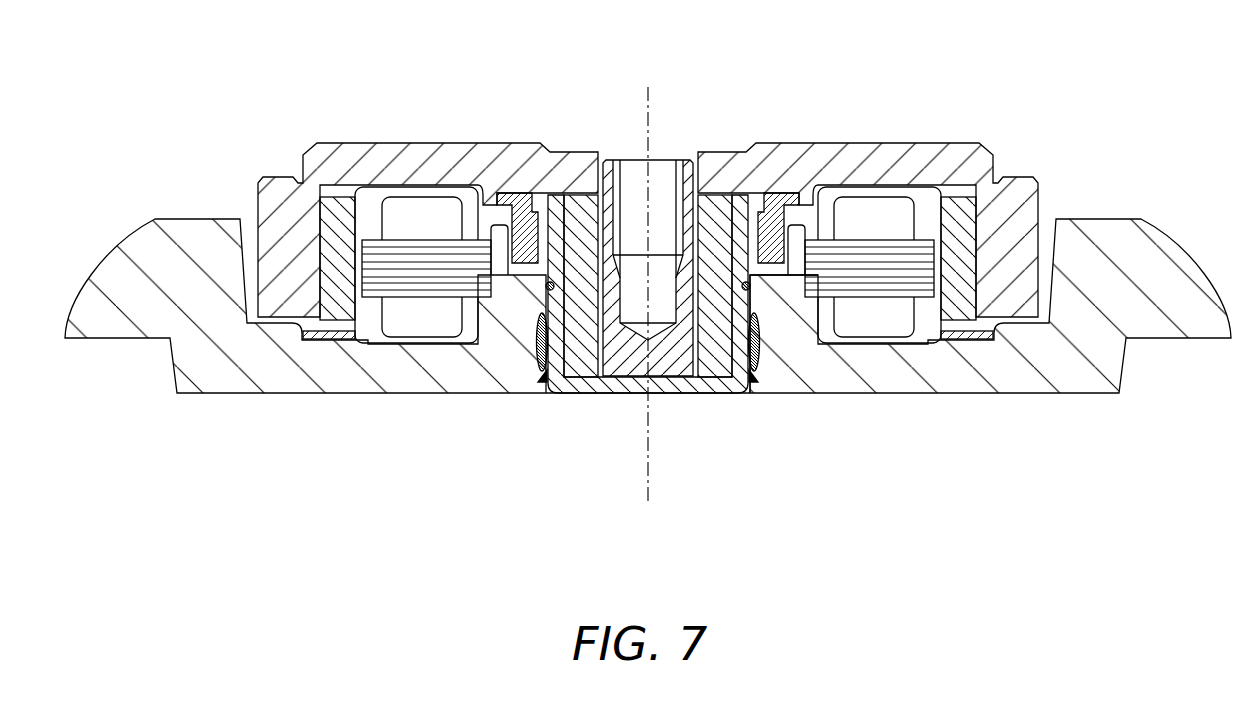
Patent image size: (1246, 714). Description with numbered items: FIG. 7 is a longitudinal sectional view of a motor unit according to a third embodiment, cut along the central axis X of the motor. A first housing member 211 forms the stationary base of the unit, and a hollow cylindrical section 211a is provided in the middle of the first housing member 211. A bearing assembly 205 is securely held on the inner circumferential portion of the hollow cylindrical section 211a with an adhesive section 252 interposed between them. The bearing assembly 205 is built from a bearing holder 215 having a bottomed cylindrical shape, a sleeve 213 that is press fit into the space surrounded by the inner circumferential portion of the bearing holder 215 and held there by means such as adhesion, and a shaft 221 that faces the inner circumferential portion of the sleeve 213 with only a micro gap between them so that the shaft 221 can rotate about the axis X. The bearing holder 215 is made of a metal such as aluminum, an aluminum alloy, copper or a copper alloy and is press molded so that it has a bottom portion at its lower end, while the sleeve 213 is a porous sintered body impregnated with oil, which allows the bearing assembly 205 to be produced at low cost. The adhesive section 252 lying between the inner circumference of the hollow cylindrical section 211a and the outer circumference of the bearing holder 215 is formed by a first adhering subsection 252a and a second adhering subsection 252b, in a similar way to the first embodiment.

The shaft 221 is at (689, 159).
The bearing holder 215 is at (564, 382).
The sleeve 213 is at (718, 339).
The first housing member 211 is at (953, 367).
The hollow cylindrical section 211a is at (785, 338).
The bearing assembly 205 is at (705, 365).
The adhesive section 252 is at (578, 418).
The first adhering subsection 252a is at (546, 289).
The second adhering subsection 252b is at (537, 340).
The central axis X is at (647, 143).